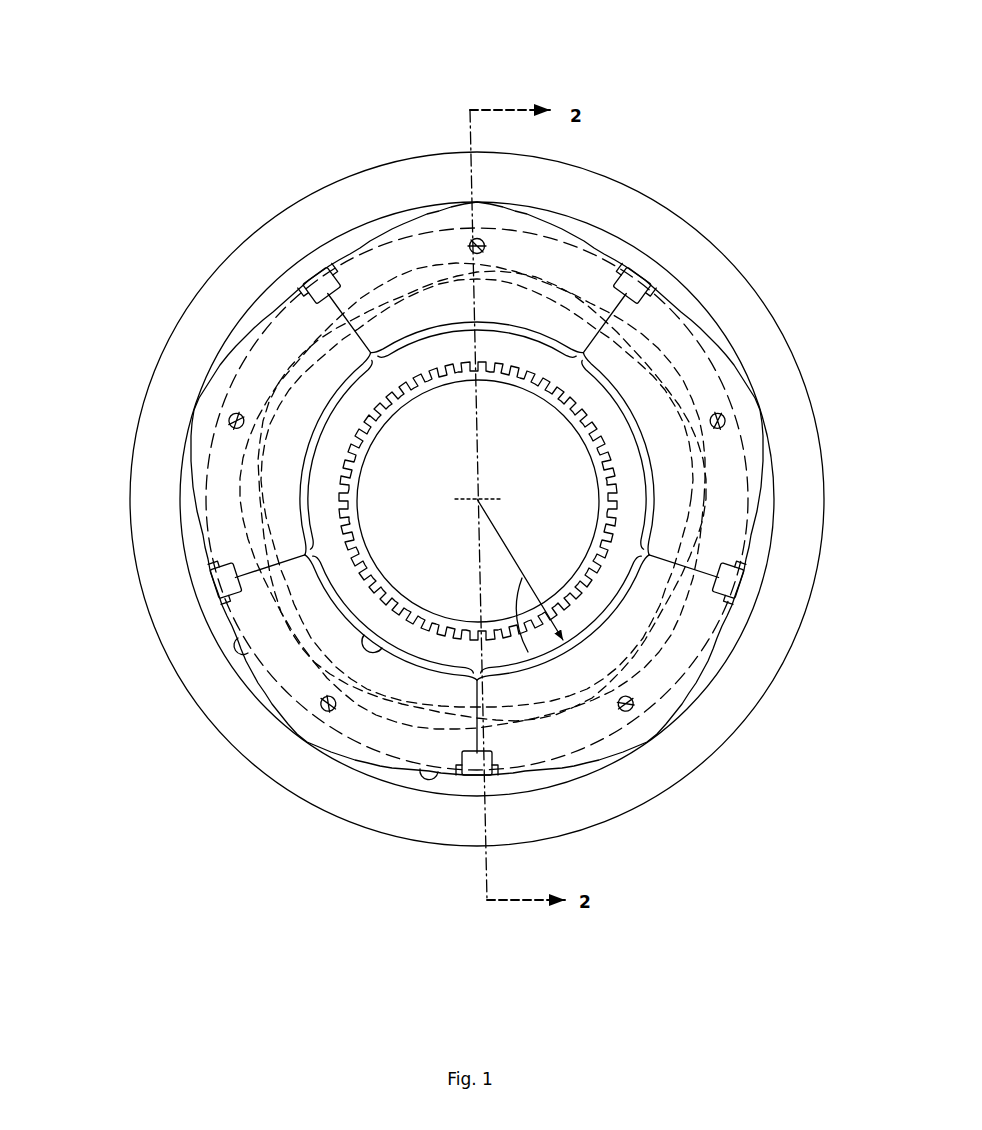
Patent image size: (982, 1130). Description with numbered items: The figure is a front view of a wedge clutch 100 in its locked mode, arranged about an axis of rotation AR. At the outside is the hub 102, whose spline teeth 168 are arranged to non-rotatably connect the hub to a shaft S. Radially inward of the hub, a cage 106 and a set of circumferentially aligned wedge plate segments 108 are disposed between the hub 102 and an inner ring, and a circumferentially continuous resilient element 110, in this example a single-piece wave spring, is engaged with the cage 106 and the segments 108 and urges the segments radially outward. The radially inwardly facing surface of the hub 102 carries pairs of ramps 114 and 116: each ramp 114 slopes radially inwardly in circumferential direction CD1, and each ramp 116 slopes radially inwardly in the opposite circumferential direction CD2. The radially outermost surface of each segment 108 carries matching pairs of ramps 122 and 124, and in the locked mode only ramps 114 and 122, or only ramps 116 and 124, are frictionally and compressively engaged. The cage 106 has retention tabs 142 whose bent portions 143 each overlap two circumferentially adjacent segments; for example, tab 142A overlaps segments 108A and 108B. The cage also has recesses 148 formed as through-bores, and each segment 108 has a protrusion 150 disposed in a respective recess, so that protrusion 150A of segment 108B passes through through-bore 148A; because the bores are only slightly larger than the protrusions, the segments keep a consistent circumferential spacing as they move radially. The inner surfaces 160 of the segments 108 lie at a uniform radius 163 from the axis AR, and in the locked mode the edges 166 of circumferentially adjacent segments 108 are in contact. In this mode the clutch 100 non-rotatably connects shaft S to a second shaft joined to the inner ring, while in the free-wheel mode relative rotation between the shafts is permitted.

The wedge clutch 100 is at (717, 78).
The hub 102 is at (257, 226).
The cage 106 is at (258, 337).
The wedge plate segments 108 is at (720, 650).
The wedge plate segment 108A is at (378, 232).
The wedge plate segment 108B is at (683, 307).
The resilient element 110 is at (282, 372).
The ramp 114 is at (247, 653).
The ramp 116 is at (420, 768).
The ramp 122 is at (262, 686).
The ramp 124 is at (390, 768).
The retention tabs 142 is at (745, 588).
The retention tab 142A is at (640, 280).
The bent portion of tab 143 is at (752, 578).
The recesses 148 is at (632, 712).
The through-bore 148A is at (237, 417).
The protrusions 150 is at (633, 702).
The protrusion 150A is at (237, 424).
The inner surfaces 160 is at (370, 638).
The uniform radius 163 is at (503, 545).
The edges 166 is at (618, 325).
The spline teeth 168 is at (410, 397).
The shaft S is at (533, 393).
The axis of rotation AR is at (478, 499).
The circumferential direction CD1 is at (343, 98).
The circumferential direction CD2 is at (330, 75).